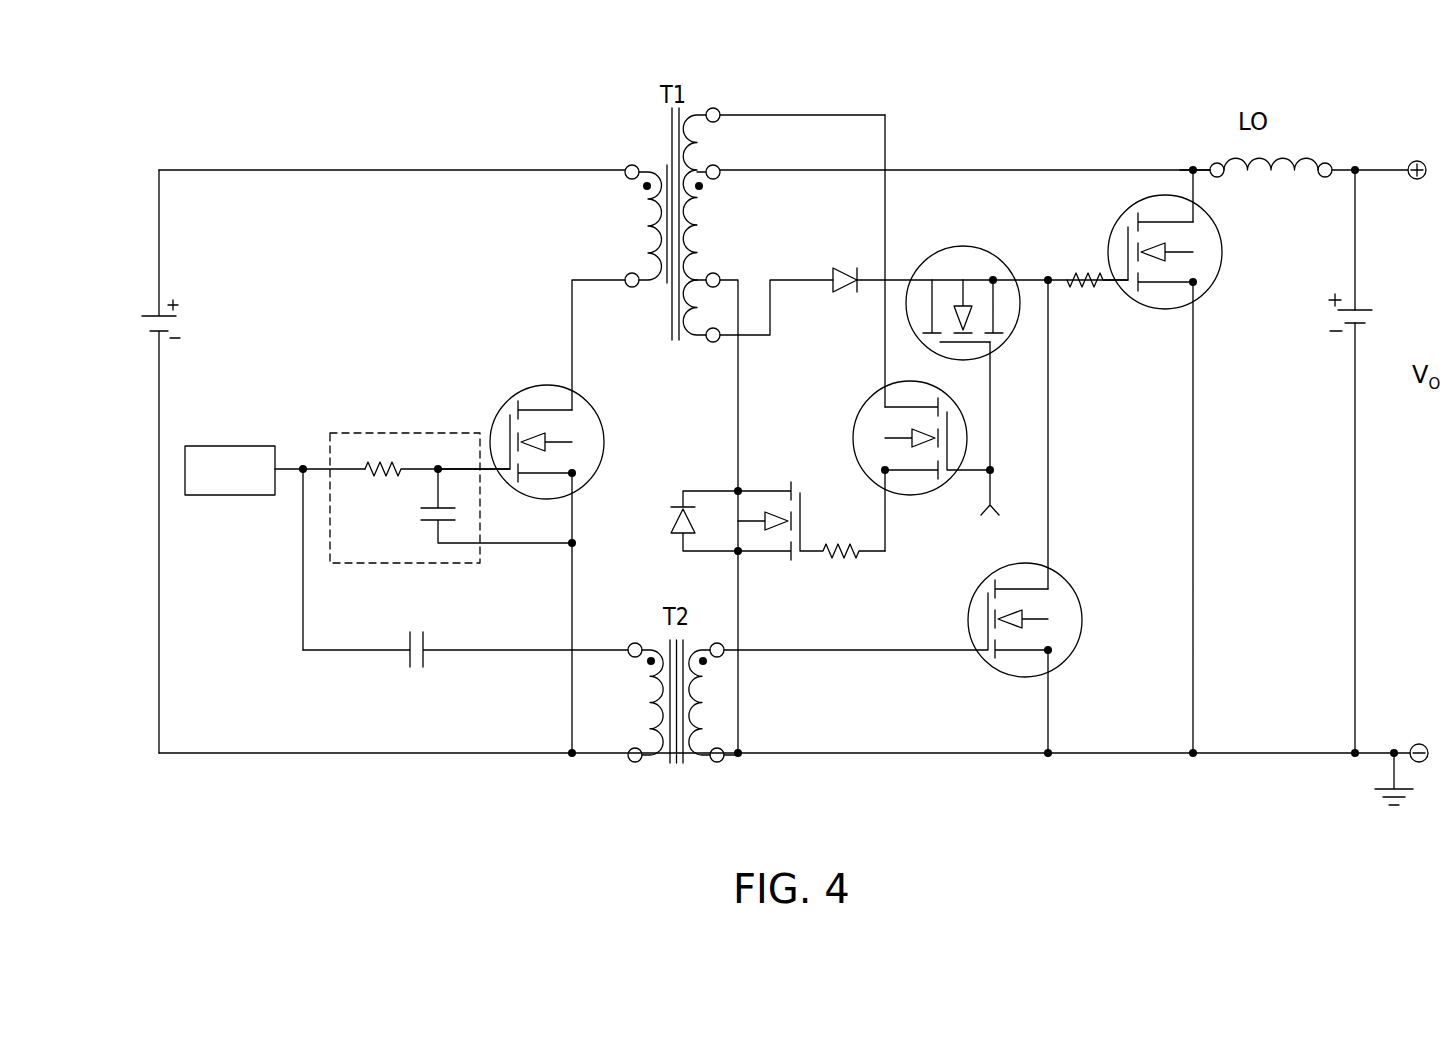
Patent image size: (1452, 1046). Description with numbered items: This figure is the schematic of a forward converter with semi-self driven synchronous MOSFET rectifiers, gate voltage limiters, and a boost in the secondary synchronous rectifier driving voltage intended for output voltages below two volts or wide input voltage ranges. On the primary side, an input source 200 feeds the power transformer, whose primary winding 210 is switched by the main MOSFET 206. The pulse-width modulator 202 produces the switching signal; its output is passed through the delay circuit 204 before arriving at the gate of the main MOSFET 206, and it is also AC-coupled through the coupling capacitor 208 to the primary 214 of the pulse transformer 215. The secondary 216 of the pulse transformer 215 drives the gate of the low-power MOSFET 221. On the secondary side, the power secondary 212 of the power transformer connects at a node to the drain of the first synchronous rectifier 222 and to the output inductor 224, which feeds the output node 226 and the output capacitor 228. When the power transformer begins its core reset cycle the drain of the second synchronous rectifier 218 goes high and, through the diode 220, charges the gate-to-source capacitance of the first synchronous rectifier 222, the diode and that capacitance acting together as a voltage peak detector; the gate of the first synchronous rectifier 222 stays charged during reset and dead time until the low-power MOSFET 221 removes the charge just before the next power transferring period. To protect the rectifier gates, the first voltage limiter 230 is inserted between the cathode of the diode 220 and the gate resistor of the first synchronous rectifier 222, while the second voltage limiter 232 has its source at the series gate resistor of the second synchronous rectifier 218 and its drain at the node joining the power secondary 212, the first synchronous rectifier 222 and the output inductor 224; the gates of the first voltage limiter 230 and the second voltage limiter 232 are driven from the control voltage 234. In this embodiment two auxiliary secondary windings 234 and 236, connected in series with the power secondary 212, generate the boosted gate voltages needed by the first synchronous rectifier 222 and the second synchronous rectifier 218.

The input voltage source 200 is at (190, 312).
The PWM 202 is at (246, 493).
The delay circuit 204 is at (402, 430).
The Q1 206 is at (518, 384).
The capacitor C1 208 is at (400, 670).
The primary winding of transformer T1 210 is at (628, 218).
The power secondary of transformer T1 212 is at (724, 222).
The primary of T2 214 is at (632, 773).
The pulse transformer T2 215 is at (678, 771).
The secondary of pulse transformer T2 216 is at (726, 773).
The Q2 218 is at (676, 549).
The diode D1 220 is at (827, 266).
The Q4 221 is at (988, 681).
The Q3 222 is at (1211, 302).
The inductor LO 224 is at (1192, 153).
The positive output terminal 226 is at (1408, 153).
The output capacitor CO 228 is at (1368, 297).
The Q5 230 is at (998, 246).
The Q6 232 is at (876, 386).
The control voltage VC / auxiliary secondary winding 234 is at (735, 153).
The auxiliary secondary winding 236 is at (723, 310).